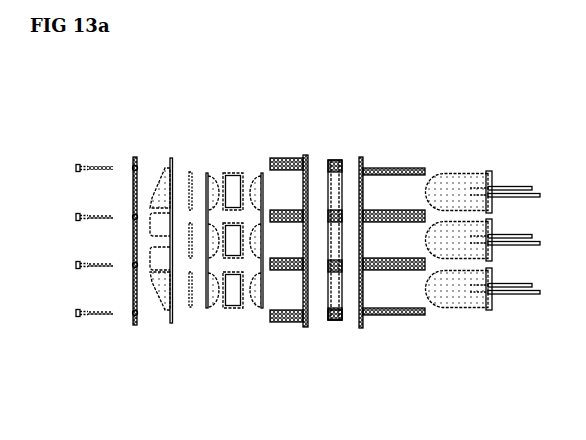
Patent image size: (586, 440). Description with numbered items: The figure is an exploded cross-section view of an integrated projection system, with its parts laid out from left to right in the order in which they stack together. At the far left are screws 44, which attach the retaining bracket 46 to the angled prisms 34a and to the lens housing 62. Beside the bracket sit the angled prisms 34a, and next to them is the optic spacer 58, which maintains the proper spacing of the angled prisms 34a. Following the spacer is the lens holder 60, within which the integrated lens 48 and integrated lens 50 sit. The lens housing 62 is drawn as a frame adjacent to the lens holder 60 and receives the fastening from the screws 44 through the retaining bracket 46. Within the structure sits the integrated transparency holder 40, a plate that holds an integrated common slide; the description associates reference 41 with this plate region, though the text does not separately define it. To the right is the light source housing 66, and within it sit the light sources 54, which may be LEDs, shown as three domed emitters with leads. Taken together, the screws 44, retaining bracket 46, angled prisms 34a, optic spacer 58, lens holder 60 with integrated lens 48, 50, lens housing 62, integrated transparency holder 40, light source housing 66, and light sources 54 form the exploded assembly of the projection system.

The angled prisms 34a is at (162, 298).
The integrated transparency holder 40 is at (340, 315).
The circuit board plate 41 is at (335, 172).
The screws 44 is at (85, 163).
The retaining bracket 46 is at (137, 157).
The integrated lens 48 is at (212, 178).
The integrated lens 50 is at (256, 178).
The light sources 54 is at (452, 177).
The optic spacer 58 is at (190, 307).
The lens holder 60 is at (232, 308).
The lens housing 62 is at (282, 313).
The light source housing 66 is at (388, 313).